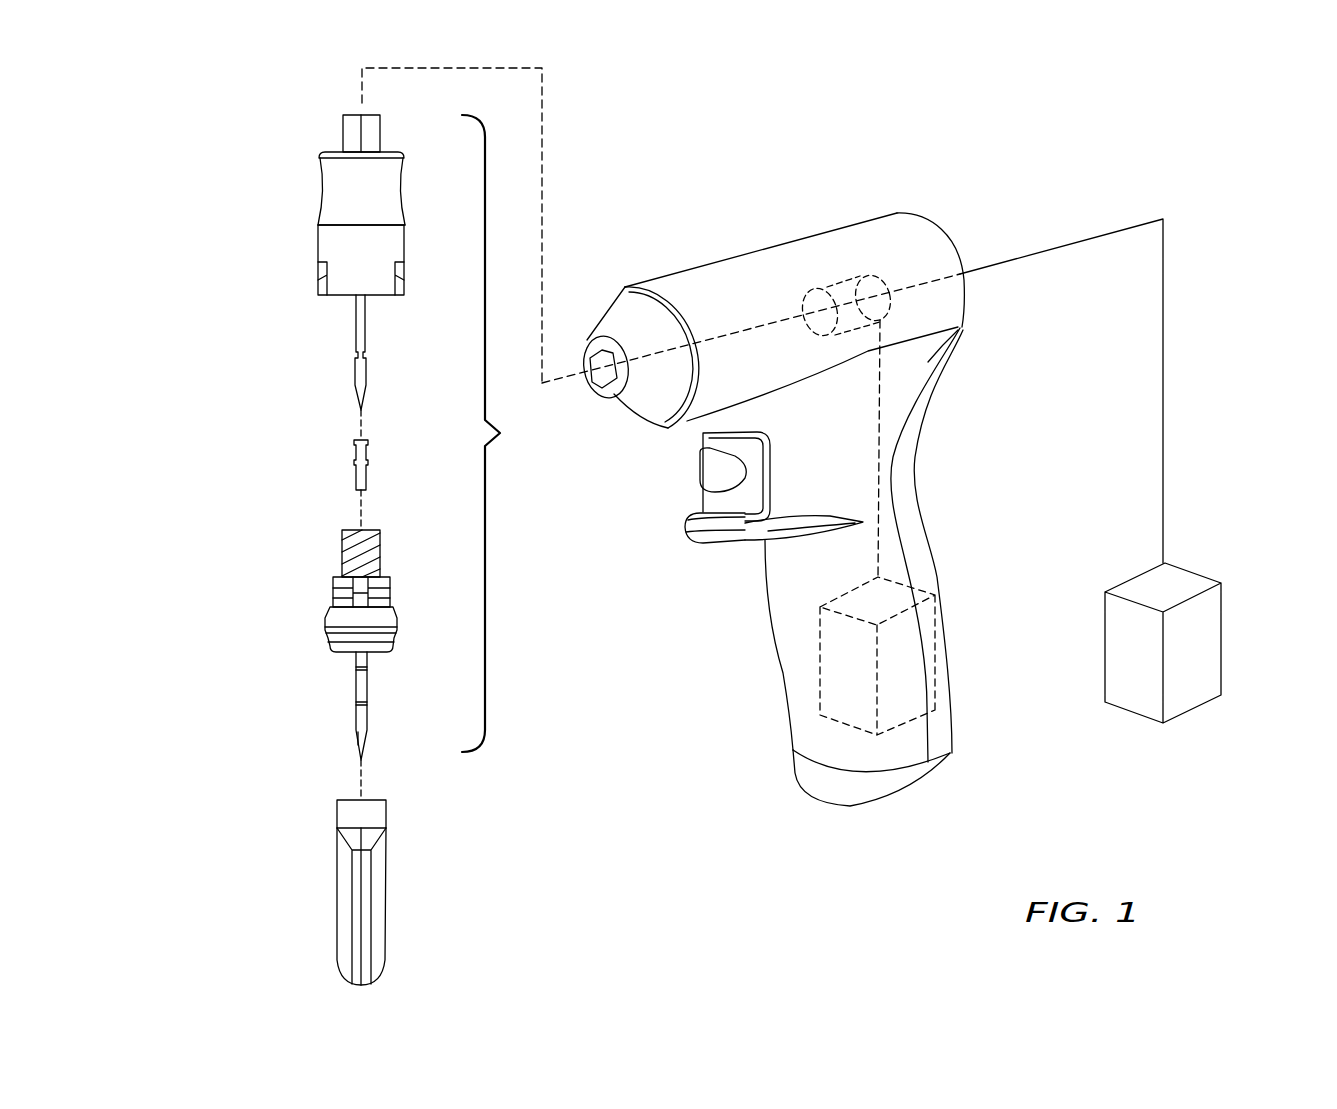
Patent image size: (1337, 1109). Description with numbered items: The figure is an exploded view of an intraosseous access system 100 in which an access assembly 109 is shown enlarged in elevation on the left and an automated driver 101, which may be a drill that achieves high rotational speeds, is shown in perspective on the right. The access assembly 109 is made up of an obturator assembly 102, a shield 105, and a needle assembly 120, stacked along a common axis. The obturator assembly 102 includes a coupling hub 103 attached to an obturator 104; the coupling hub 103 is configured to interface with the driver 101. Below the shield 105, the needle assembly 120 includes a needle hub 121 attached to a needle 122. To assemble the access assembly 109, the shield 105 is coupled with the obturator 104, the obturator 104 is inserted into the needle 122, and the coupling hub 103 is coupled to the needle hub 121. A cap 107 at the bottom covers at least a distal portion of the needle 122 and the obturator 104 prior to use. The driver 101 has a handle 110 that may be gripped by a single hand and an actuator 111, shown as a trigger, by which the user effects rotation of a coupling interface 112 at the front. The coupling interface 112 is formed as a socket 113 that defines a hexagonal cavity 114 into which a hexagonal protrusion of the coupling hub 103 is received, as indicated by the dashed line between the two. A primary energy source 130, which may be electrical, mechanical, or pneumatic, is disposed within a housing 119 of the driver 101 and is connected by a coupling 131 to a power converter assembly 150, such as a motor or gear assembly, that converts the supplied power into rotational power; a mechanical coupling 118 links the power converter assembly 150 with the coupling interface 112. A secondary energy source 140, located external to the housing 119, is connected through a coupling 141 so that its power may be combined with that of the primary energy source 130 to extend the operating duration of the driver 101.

The intraosseous access system 100 is at (924, 437).
The driver 101 is at (803, 476).
The obturator assembly 102 is at (336, 239).
The coupling hub 103 is at (386, 243).
The obturator 104 is at (365, 318).
The shield 105 is at (368, 452).
The cap 107 is at (365, 811).
The access assembly 109 is at (505, 433).
The handle 110 is at (790, 658).
The actuator 111 is at (723, 472).
The coupling interface 112 is at (589, 398).
The socket 113 is at (612, 392).
The cavity 114 is at (592, 357).
The mechanical coupling 118 is at (740, 330).
The housing 119 is at (952, 708).
The needle assembly 120 is at (381, 551).
The needle hub 121 is at (383, 617).
The needle 122 is at (363, 710).
The primary energy source 130 is at (935, 620).
The coupling 131 is at (880, 477).
The secondary energy source 140 is at (1221, 627).
The coupling 141 is at (1165, 320).
The power converter assembly 150 is at (838, 285).